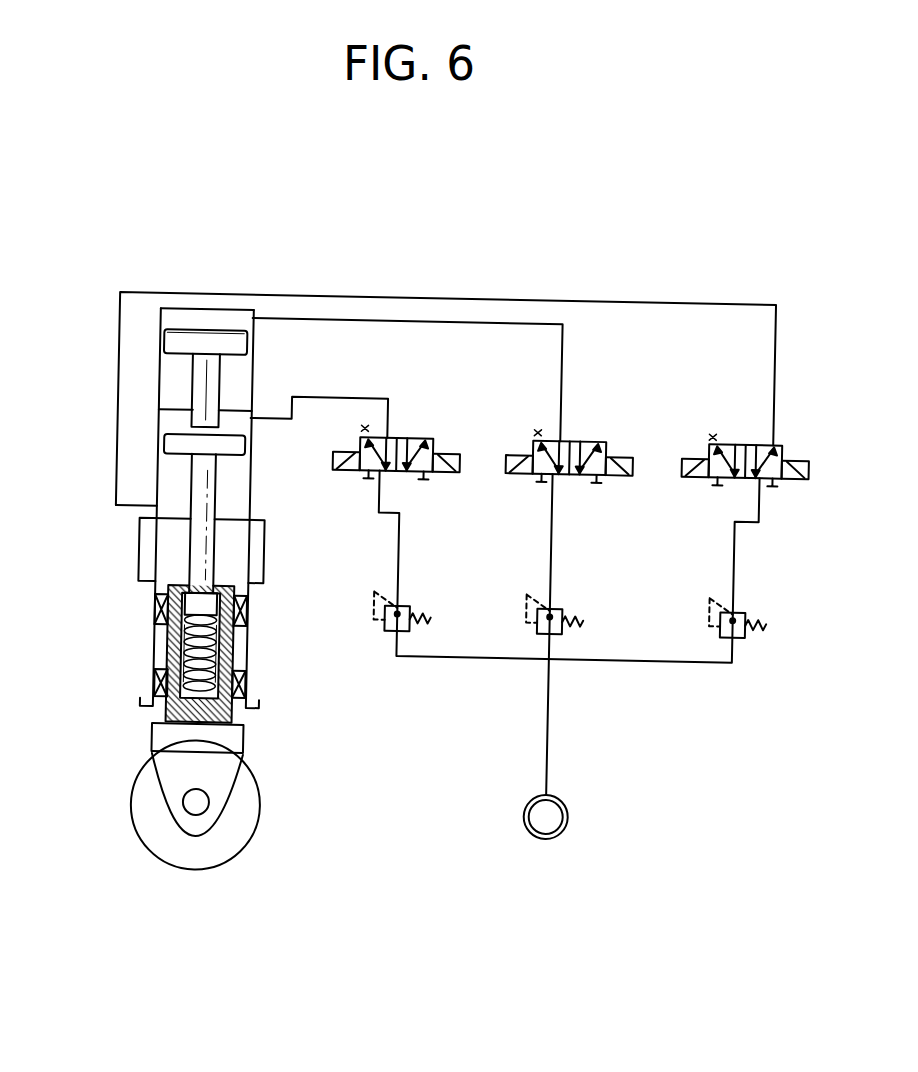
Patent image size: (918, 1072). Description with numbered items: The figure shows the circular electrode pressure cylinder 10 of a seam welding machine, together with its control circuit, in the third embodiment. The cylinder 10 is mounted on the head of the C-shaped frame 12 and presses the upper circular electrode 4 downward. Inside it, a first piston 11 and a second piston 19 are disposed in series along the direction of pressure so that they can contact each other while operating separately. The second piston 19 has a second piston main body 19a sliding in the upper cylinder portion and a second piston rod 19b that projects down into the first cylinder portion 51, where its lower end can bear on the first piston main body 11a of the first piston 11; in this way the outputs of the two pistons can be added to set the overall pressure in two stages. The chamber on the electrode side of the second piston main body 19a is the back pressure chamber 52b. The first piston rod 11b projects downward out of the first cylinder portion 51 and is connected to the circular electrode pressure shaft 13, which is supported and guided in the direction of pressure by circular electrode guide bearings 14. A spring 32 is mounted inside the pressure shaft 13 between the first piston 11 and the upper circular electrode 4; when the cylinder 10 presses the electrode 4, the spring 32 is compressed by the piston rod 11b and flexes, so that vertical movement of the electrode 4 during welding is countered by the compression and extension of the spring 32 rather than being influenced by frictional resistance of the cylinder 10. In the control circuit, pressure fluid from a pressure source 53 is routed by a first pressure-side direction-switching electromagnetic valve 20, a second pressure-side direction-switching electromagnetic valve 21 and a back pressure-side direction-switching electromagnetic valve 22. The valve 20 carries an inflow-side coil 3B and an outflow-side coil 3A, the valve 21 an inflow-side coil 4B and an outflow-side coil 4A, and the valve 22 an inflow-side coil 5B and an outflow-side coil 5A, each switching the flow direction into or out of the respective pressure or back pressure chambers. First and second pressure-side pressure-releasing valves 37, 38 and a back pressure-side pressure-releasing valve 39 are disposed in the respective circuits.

The circular electrode pressure cylinder 10 is at (248, 371).
The first cylinder portion 51 is at (251, 479).
The second piston 19 is at (248, 337).
The second piston main body 19a is at (171, 344).
The second piston rod 19b is at (198, 370).
The back pressure chamber 52b is at (167, 379).
The first piston main body 11a is at (173, 442).
The first piston 11 is at (188, 472).
The first piston rod 11b is at (197, 497).
The C-shaped frame 12 is at (265, 547).
The circular electrode pressure shaft 13 is at (249, 649).
The spring 32 is at (172, 661).
The circular electrode guide bearings 14 is at (246, 607).
The upper circular electrode 4 is at (267, 779).
The first pressure-side direction-switching electromagnetic valve 20 is at (394, 475).
The second pressure-side direction-switching electromagnetic valve 21 is at (566, 481).
The back pressure-side direction-switching electromagnetic valve 22 is at (741, 484).
The outflow-side coil 3A is at (344, 445).
The inflow-side coil 3B is at (452, 446).
The outflow-side coil 4A is at (516, 449).
The inflow-side coil 4B is at (626, 450).
The outflow-side coil 5A is at (692, 452).
The inflow-side coil 5B is at (800, 453).
The first pressure-side pressure-releasing valve 37 is at (400, 600).
The second pressure-side pressure-releasing valve 38 is at (553, 600).
The back pressure-side pressure-releasing valve 39 is at (736, 600).
The pressure source 53 is at (573, 808).